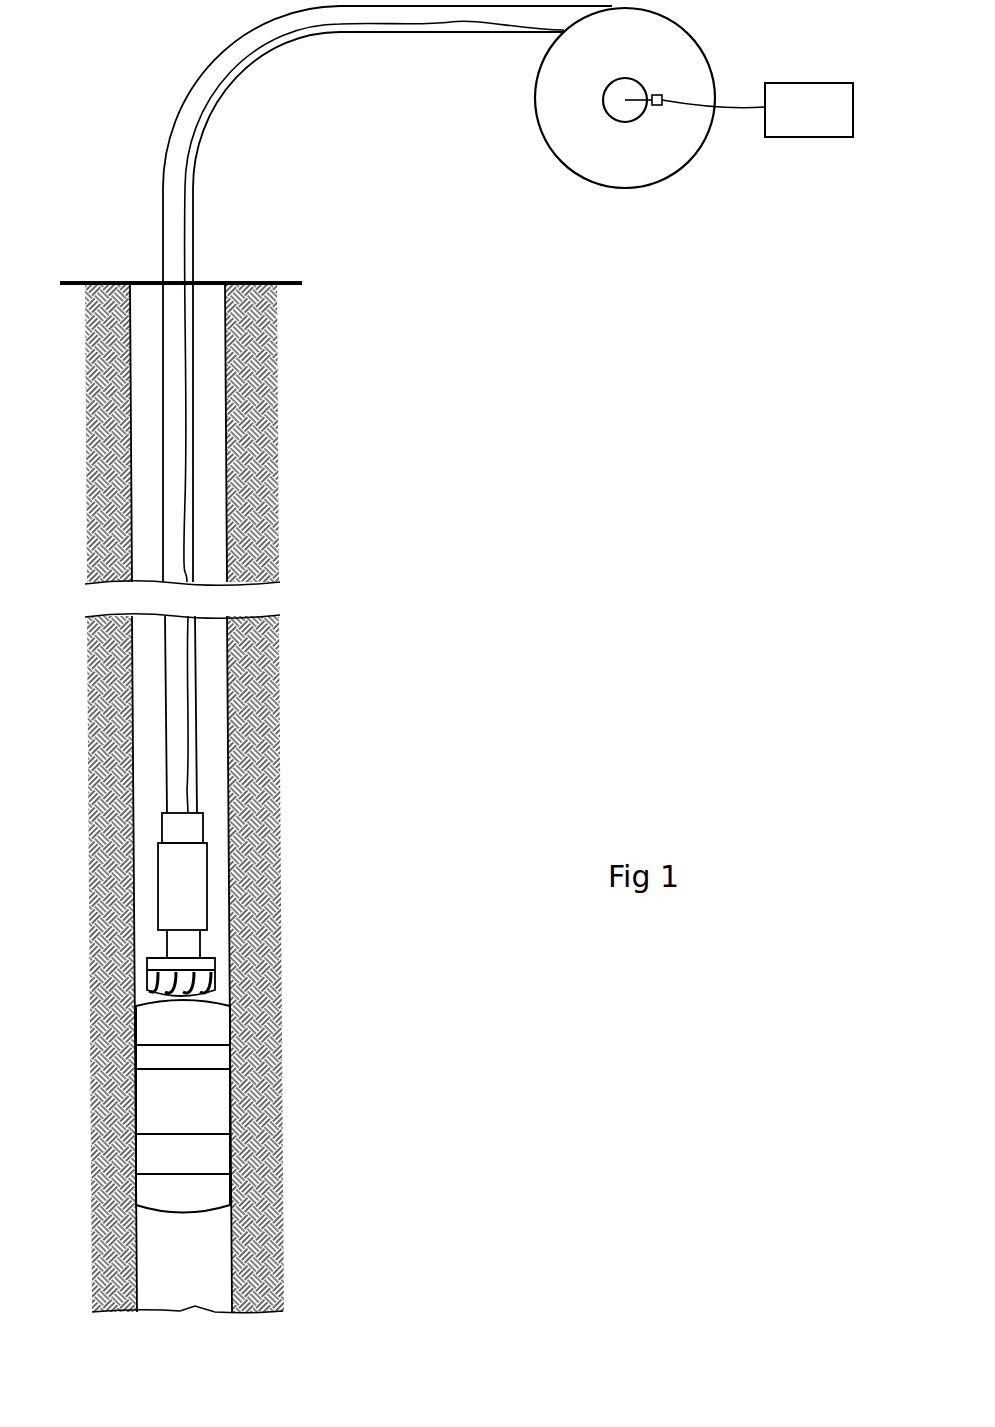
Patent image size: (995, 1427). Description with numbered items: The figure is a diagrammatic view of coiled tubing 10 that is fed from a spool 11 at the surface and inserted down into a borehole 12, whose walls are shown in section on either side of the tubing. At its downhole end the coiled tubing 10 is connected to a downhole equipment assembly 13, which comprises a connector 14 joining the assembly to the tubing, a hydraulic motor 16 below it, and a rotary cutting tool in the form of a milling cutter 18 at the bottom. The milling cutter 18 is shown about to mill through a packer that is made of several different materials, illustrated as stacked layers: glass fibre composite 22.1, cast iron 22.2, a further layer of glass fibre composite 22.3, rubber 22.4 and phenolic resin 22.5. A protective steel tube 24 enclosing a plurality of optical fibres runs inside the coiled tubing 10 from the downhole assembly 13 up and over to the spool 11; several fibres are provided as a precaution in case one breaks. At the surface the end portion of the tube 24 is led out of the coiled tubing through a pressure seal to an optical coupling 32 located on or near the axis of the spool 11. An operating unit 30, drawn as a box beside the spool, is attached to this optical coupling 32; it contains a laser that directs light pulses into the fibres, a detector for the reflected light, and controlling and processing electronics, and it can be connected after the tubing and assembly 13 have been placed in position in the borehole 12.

The coiled tubing 10 is at (190, 97).
The spool 11 is at (660, 50).
The borehole 12 is at (232, 462).
The downhole equipment assembly 13 is at (231, 904).
The connector 14 is at (190, 830).
The hydraulic motor 16 is at (188, 905).
The milling cutter 18 is at (215, 980).
The glass fibre composite 22.1 is at (215, 1020).
The cast iron 22.2 is at (212, 1057).
The glass fibre composite 22.3 is at (212, 1103).
The rubber 22.4 is at (212, 1153).
The phenolic resin 22.5 is at (215, 1192).
The protective steel tube 24 is at (405, 24).
The operating unit 30 is at (828, 120).
The optical coupling 32 is at (655, 106).